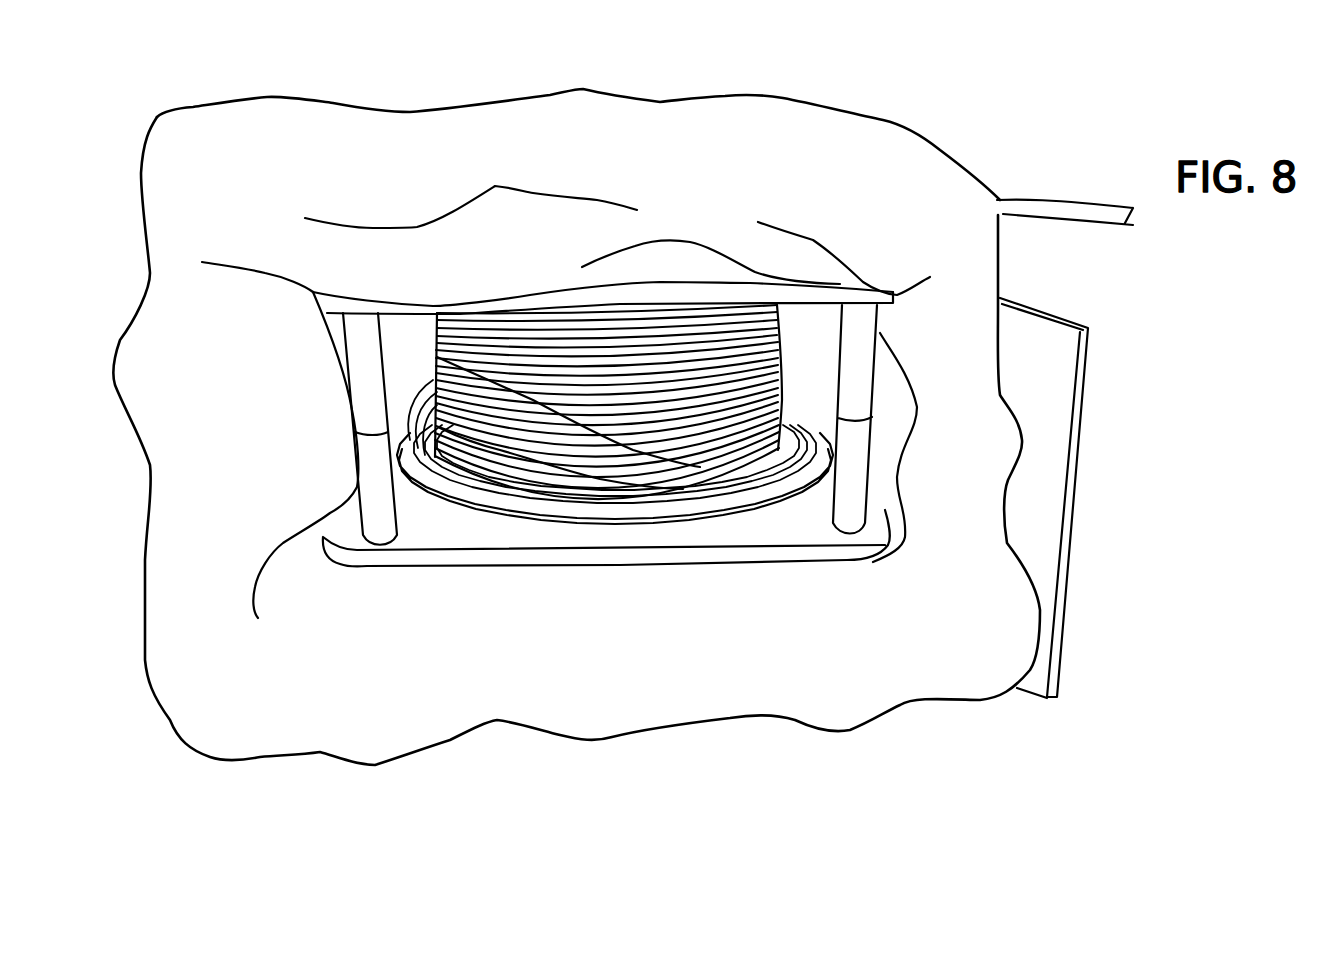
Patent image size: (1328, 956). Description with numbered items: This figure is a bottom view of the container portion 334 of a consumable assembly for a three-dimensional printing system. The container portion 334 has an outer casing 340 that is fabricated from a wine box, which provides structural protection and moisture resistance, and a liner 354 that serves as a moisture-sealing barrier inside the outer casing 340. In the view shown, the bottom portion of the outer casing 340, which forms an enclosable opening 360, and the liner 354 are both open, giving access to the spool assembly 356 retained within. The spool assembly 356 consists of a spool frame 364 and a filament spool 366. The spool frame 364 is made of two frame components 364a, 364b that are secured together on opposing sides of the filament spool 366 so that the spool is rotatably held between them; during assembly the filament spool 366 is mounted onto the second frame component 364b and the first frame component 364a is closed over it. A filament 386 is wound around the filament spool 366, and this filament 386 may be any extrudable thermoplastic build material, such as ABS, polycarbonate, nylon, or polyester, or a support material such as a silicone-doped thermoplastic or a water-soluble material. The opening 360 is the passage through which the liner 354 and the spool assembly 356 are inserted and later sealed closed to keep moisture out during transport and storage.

The container portion 334 is at (1160, 443).
The outer casing 340 is at (1073, 537).
The liner 354 is at (643, 153).
The spool assembly 356 is at (529, 293).
The opening 360 is at (303, 585).
The spool frame 364 is at (777, 439).
The frame component 364a is at (750, 283).
The frame component 364b is at (437, 550).
The filament spool 366 is at (537, 507).
The filament 386 is at (628, 440).